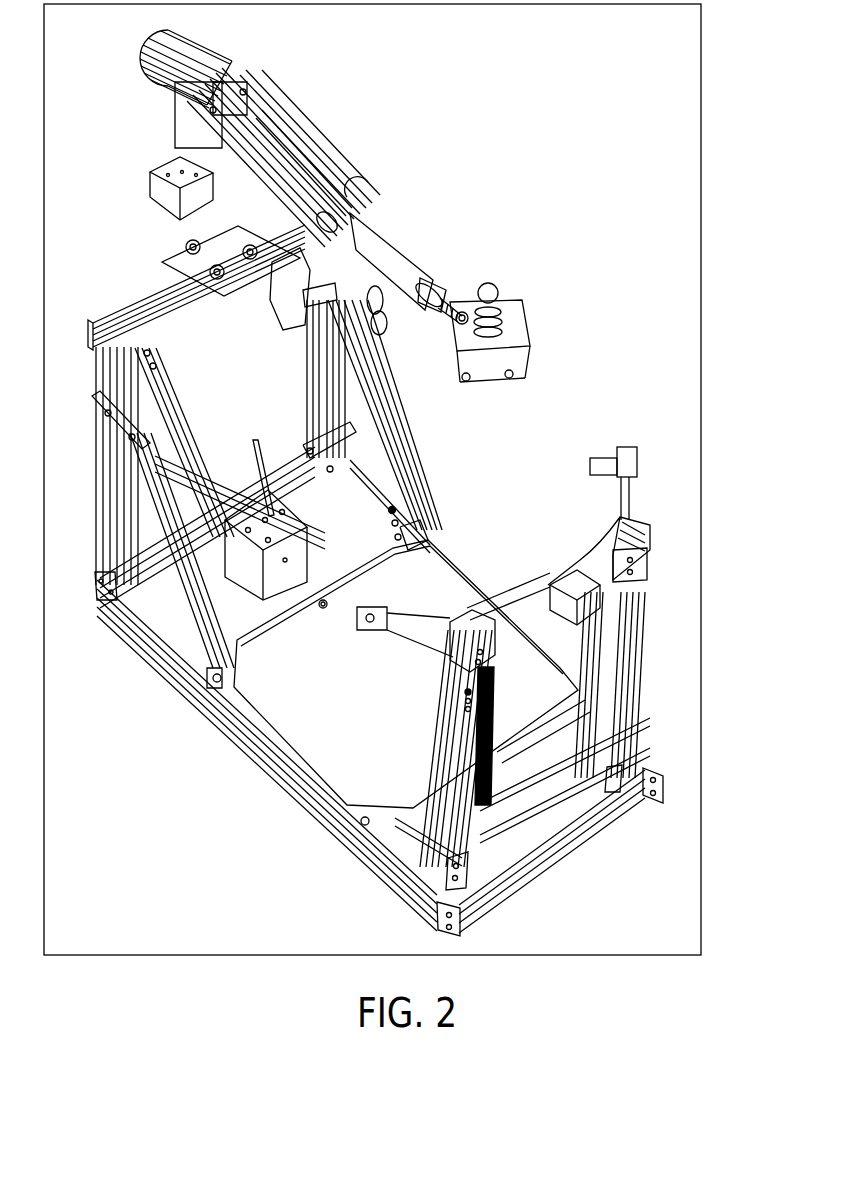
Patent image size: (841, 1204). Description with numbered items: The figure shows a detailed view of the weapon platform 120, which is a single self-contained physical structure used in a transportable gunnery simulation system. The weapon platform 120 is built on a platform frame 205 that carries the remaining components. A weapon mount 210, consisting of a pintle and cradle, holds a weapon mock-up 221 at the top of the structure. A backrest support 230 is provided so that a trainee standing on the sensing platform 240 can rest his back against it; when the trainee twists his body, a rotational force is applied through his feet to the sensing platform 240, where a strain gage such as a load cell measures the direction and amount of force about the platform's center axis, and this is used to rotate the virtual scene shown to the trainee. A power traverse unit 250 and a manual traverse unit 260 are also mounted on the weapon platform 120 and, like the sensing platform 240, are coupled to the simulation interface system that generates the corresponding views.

The weapon platform 120 is at (404, 479).
The platform frame 205 is at (198, 697).
The weapon mount 210 is at (188, 246).
The weapon mock-up 221 is at (333, 168).
The backrest support 230 is at (533, 630).
The sensing platform 240 is at (300, 740).
The power traverse unit 250 is at (513, 317).
The manual traverse unit 260 is at (228, 560).